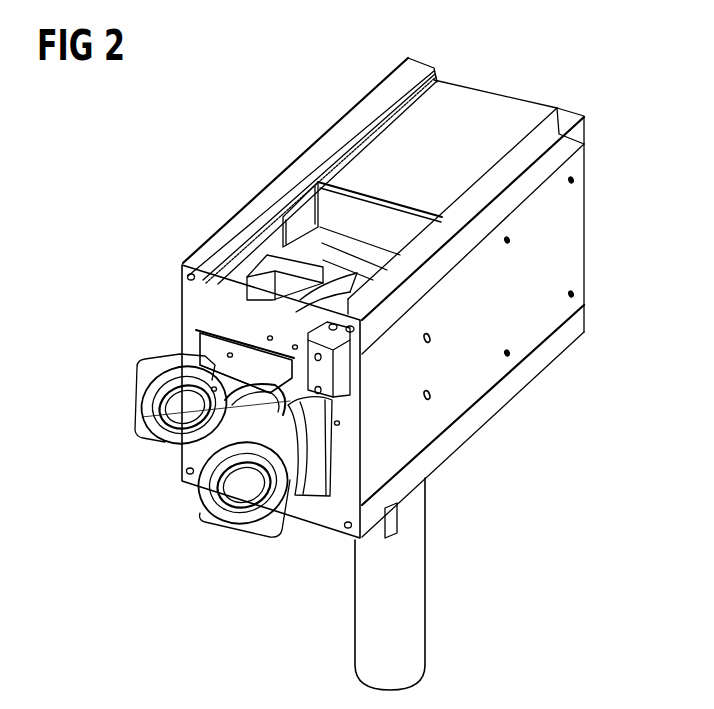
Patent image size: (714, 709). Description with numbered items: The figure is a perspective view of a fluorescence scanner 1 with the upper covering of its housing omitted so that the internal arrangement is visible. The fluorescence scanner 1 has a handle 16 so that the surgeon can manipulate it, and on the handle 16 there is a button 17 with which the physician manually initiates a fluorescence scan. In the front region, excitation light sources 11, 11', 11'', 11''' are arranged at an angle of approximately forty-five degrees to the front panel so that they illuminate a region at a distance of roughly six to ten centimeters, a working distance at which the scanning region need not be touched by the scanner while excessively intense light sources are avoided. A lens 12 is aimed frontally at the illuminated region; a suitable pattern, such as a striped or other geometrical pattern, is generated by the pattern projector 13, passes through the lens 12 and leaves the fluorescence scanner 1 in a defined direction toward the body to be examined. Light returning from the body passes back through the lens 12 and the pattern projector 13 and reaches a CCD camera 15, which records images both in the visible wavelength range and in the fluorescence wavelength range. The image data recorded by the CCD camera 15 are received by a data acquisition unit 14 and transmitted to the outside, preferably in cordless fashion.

The fluorescence scanner 1 is at (163, 190).
The excitation light source 11 is at (235, 351).
The excitation light source 11' is at (179, 404).
The excitation light source 11'' is at (230, 472).
The excitation light source 11''' is at (321, 496).
The lens 12 is at (167, 430).
The pattern projector 13 is at (333, 287).
The data acquisition unit 14 is at (477, 117).
The CCD camera 15 is at (363, 248).
The handle 16 is at (410, 596).
The button 17 is at (392, 522).